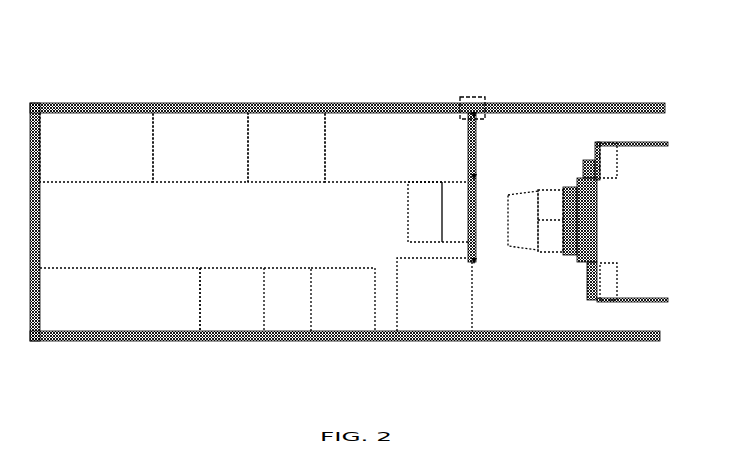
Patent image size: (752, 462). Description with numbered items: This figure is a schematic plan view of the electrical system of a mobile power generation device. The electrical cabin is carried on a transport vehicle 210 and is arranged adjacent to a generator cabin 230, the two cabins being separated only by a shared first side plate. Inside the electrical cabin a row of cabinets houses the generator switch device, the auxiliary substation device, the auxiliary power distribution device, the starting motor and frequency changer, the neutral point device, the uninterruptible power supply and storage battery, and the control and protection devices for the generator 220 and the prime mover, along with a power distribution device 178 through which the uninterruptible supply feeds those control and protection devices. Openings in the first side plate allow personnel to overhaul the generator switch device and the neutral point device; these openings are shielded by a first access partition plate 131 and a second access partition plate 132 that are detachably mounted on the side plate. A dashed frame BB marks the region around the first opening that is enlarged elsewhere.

The transport vehicle 210 is at (247, 200).
The dashed frame BB is at (471, 97).
The first access partition plate 131 is at (474, 163).
The second access partition plate 132 is at (473, 297).
The generator 220 is at (617, 202).
The generator cabin 230 is at (584, 293).
The power distribution device 178 is at (297, 307).